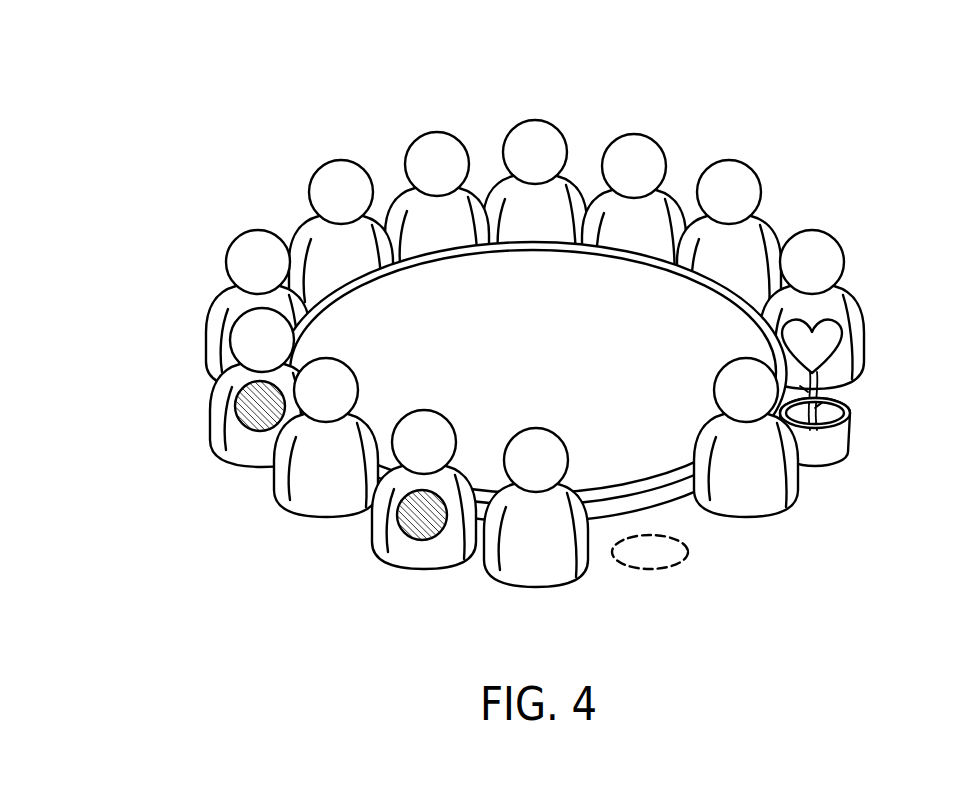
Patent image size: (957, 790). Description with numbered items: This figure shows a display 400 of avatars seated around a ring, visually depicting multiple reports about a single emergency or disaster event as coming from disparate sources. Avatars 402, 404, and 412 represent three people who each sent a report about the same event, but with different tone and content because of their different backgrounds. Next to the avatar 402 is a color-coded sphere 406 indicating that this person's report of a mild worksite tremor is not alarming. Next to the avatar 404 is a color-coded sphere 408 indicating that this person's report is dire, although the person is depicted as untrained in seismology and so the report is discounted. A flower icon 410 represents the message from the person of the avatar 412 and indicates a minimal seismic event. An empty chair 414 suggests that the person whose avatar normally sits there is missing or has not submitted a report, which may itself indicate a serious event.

The display 400 is at (155, 120).
The avatar 402 is at (255, 470).
The avatar 404 is at (430, 568).
The color-coded sphere 406 is at (248, 407).
The color-coded sphere 408 is at (408, 530).
The flower icon 410 is at (838, 443).
The avatar 412 is at (770, 503).
The chair 414 is at (663, 556).